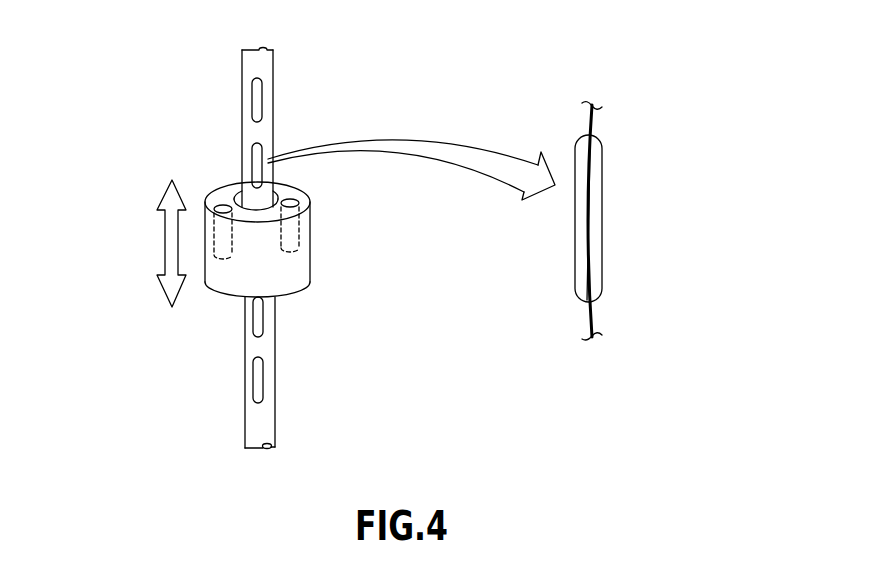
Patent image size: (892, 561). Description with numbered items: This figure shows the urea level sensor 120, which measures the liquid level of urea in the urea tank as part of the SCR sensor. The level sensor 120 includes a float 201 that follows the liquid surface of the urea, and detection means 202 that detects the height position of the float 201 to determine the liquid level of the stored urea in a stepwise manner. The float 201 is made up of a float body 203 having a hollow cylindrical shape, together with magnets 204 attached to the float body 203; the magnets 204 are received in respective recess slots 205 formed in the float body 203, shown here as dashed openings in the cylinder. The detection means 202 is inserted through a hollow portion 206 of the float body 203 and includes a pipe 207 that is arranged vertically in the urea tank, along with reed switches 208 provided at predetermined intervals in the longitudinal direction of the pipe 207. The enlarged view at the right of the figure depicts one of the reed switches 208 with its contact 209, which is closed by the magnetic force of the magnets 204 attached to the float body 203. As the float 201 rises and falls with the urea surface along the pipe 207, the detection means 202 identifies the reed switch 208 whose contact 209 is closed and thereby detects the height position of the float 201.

The urea level sensor 120 is at (174, 81).
The float 201 is at (220, 190).
The detection means 202 is at (206, 394).
The float body 203 is at (303, 272).
The magnets 204 is at (298, 238).
The recess slots 205 is at (307, 192).
The hollow portion 206 is at (283, 183).
The pipe 207 is at (265, 430).
The reed switches 208 is at (258, 362).
The contact 209 is at (590, 220).